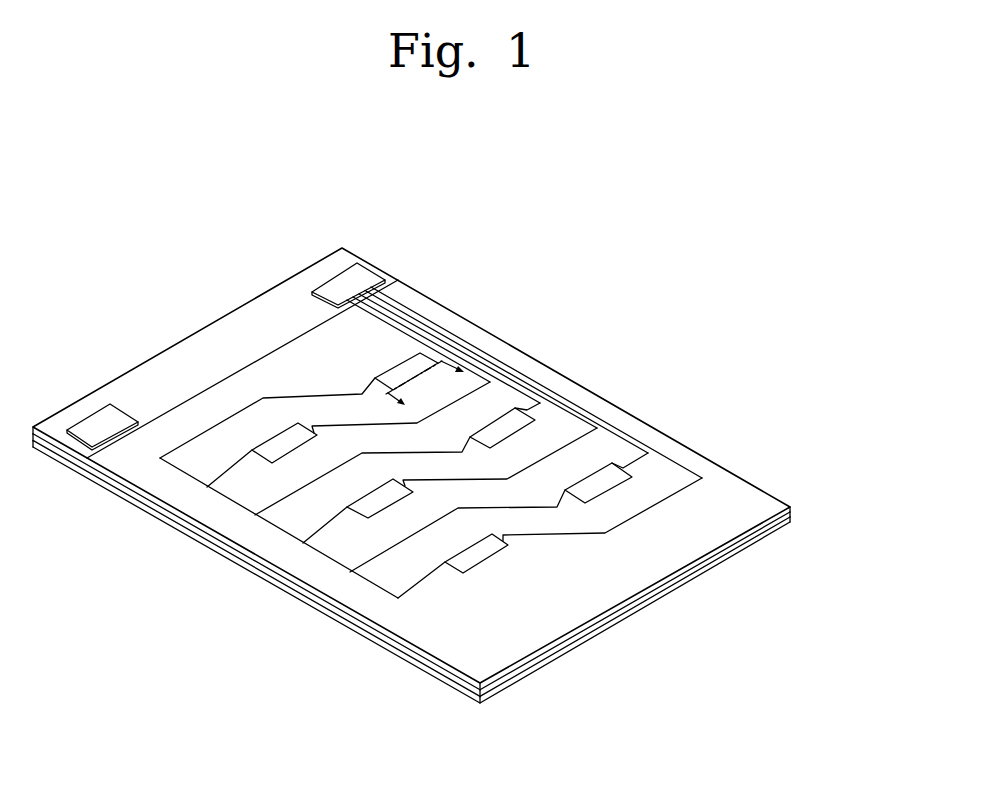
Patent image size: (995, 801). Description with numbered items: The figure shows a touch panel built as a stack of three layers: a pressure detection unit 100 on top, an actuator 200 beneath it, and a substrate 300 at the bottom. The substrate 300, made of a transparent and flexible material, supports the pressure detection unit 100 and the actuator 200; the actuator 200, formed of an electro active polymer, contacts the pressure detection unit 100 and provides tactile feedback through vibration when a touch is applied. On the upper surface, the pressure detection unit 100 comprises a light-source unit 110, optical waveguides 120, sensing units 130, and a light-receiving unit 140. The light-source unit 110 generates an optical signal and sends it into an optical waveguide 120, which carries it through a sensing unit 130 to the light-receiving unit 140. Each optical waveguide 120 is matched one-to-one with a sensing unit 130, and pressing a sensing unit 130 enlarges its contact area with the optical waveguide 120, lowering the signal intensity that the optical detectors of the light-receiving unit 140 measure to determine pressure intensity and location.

The pressure detection unit 100 is at (790, 507).
The actuator 200 is at (790, 513).
The substrate 300 is at (790, 520).
The light-source unit 110 is at (95, 425).
The optical waveguide 120 is at (230, 417).
The sensing unit 130 is at (415, 365).
The light-receiving unit 140 is at (342, 283).